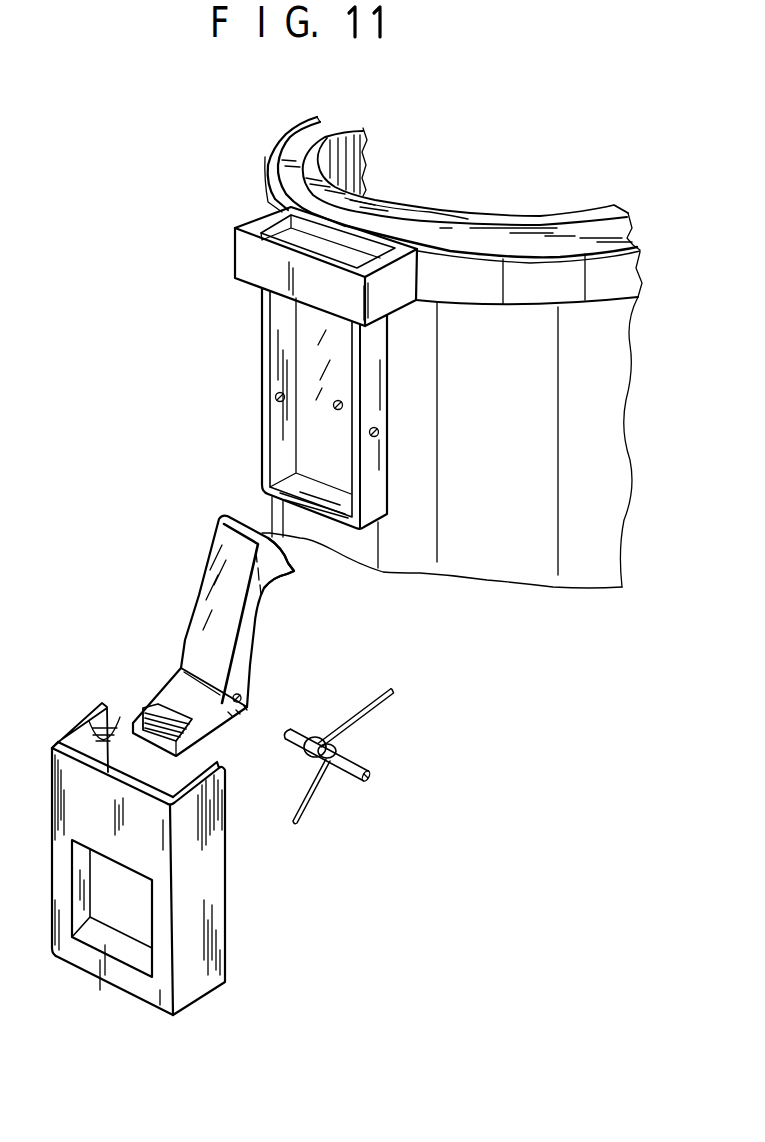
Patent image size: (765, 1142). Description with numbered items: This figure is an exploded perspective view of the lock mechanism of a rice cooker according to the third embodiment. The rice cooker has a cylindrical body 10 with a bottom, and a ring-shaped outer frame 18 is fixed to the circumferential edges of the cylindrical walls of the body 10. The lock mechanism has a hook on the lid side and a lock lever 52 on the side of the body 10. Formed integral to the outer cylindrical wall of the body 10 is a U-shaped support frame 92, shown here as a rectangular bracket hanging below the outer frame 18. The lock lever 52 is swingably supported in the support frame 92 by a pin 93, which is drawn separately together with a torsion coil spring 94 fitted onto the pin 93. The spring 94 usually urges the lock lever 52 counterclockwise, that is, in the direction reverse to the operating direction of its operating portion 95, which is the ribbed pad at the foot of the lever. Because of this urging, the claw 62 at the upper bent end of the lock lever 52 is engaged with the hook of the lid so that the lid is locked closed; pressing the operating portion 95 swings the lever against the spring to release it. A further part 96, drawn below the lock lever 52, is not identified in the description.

The body 10 is at (603, 508).
The outer frame 18 is at (479, 300).
The support frame 92 is at (373, 387).
The lock lever 52 is at (227, 636).
The claw 62 is at (285, 568).
The operating portion 95 is at (148, 706).
The torsion coil spring 94 is at (368, 702).
The pin 93 is at (362, 765).
The shackle 96 is at (213, 872).